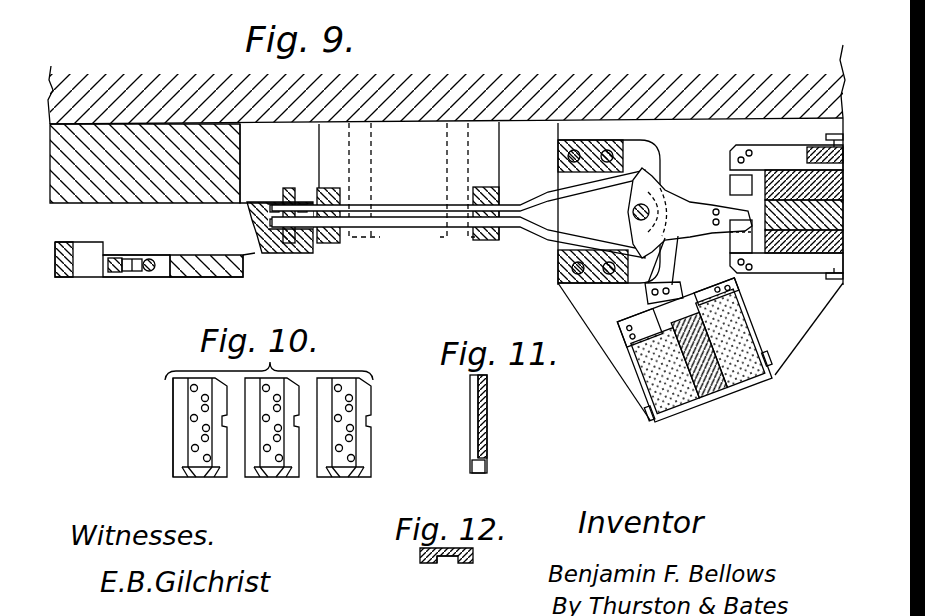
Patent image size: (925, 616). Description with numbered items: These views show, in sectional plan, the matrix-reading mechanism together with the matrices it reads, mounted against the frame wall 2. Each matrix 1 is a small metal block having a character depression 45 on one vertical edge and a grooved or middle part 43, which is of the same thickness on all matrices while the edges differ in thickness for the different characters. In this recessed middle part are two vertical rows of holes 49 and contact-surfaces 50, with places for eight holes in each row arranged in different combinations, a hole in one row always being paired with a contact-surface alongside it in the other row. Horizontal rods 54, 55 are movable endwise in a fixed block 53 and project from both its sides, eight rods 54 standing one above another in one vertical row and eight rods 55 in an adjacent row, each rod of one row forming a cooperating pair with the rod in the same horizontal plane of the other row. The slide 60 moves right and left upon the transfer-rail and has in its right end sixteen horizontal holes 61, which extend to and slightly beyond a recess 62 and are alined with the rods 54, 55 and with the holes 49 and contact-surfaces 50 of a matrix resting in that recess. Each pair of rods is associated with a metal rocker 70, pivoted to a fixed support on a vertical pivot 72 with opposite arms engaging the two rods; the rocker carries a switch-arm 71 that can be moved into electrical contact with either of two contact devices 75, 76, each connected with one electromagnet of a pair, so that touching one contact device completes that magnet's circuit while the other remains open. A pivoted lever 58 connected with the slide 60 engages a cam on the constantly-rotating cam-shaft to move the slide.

In FIG. 9, the matrix 1 is at (291, 186).
In FIG. 10, the matrix 1 is at (170, 462).
In FIG. 11, the matrix 1 is at (470, 456).
In FIG. 12, the matrix 1 is at (412, 574).
In FIG. 9, the frame wall 2 is at (446, 84).
In FIG. 10, the grooved or middle part of the matrix 43 is at (200, 470).
In FIG. 12, the grooved or middle part of the matrix 43 is at (443, 565).
In FIG. 10, the character depression 45 is at (371, 421).
In FIG. 10, the holes 49 is at (192, 389).
In FIG. 11, the holes 49 is at (478, 392).
In FIG. 12, the holes 49 is at (453, 565).
In FIG. 10, the contact-surfaces 50 is at (193, 410).
In FIG. 11, the contact-surfaces 50 is at (478, 408).
In FIG. 9, the fixed block 53 is at (336, 244).
In FIG. 9, the horizontal rods 54 is at (399, 204).
In FIG. 9, the horizontal rods 55 is at (404, 230).
In FIG. 9, the pivoted lever 58 is at (148, 274).
In FIG. 9, the slide 60 is at (155, 248).
In FIG. 9, the horizontal holes 61 is at (268, 256).
In FIG. 9, the recess 62 is at (300, 256).
In FIG. 9, the rocker 70 is at (630, 230).
In FIG. 9, the switch-arm 71 is at (716, 208).
In FIG. 9, the vertical pivot 72 is at (646, 208).
In FIG. 9, the contact device 75 is at (732, 176).
In FIG. 9, the contact device 76 is at (731, 245).